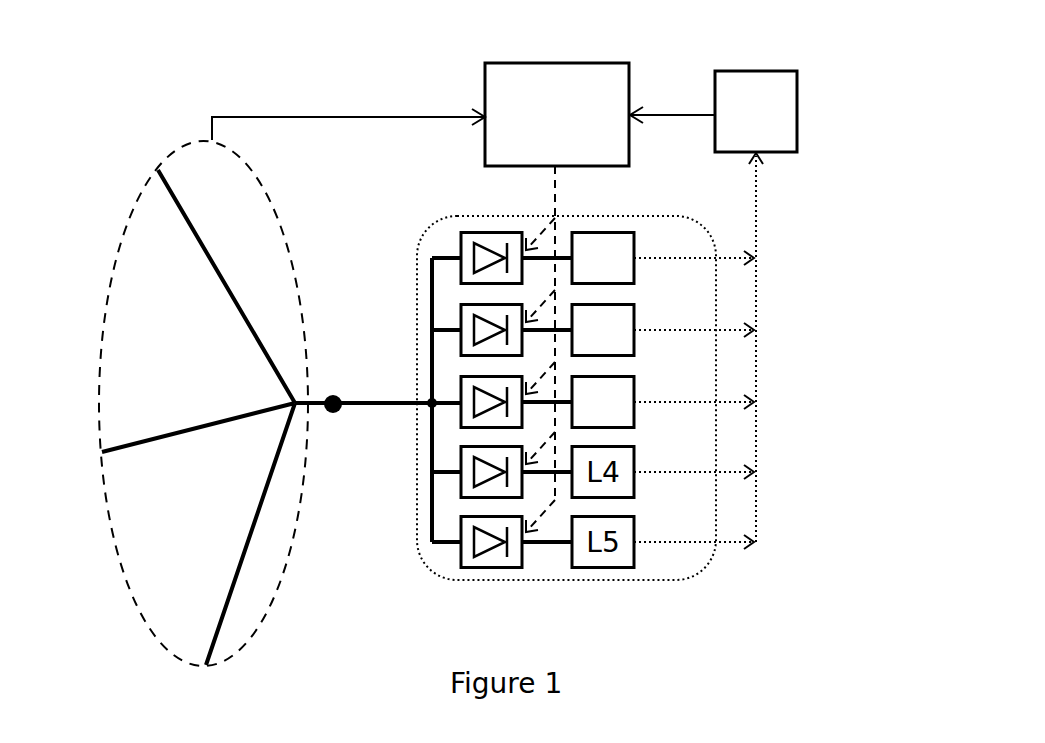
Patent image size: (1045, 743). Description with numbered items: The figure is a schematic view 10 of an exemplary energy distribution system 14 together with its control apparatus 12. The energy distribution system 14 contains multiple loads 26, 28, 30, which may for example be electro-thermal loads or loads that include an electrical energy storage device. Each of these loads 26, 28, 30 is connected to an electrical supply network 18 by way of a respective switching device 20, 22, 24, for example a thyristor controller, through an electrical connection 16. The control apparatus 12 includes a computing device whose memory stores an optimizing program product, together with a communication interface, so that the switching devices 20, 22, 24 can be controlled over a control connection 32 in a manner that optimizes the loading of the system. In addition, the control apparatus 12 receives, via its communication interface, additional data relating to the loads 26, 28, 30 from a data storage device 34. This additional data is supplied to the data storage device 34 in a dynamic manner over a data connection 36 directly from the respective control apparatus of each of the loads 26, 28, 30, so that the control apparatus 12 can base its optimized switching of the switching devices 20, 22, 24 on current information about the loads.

The schematic view 10 is at (853, 710).
The control apparatus 12 is at (487, 63).
The energy distribution system 14 is at (688, 574).
The electrical connection 16 is at (335, 396).
The electrical supply network 18 is at (127, 224).
The switching device 20 is at (457, 233).
The switching device 22 is at (456, 306).
The switching device 24 is at (460, 376).
The load 26 is at (633, 232).
The load 28 is at (634, 306).
The load 30 is at (634, 375).
The control connection 32 is at (552, 197).
The data storage device 34 is at (715, 72).
The data connection 36 is at (756, 358).